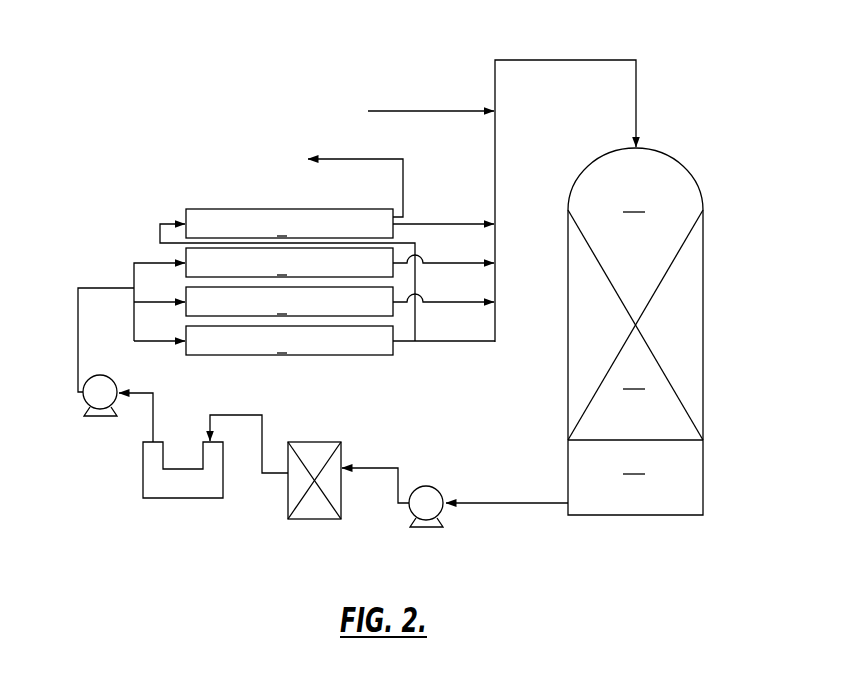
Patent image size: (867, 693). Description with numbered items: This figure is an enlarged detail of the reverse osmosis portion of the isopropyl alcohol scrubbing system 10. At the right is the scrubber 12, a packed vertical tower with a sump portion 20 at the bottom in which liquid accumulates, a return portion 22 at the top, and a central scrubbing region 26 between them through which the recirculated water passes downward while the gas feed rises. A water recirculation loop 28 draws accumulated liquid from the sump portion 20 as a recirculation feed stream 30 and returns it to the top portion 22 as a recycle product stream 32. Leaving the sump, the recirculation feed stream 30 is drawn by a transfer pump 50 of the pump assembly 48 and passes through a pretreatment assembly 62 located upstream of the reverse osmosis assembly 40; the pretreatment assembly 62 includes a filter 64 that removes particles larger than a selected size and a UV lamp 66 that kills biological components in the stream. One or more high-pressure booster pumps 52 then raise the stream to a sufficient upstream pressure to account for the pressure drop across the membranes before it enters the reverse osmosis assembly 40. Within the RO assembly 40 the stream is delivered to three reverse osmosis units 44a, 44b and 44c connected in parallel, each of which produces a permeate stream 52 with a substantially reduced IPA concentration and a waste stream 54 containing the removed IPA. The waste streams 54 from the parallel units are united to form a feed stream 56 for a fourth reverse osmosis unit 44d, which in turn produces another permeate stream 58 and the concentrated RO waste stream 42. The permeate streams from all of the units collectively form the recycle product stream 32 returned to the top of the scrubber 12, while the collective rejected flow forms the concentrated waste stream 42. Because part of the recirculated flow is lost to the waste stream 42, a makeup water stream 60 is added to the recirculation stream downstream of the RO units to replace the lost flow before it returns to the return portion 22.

The IPA scrubbing system 10 is at (785, 116).
The scrubber 12 is at (660, 331).
The sump portion 20 is at (635, 477).
The return portion 22 is at (635, 180).
The central scrubbing region 26 is at (635, 325).
The water recirculation loop 28 is at (501, 506).
The recirculation feed stream 30 is at (517, 500).
The recycle product stream 32 is at (523, 60).
The reverse osmosis assembly 40 is at (117, 196).
The concentrated RO waste stream 42 is at (357, 158).
The reverse osmosis unit 44a is at (289, 340).
The reverse osmosis unit 44b is at (289, 301).
The reverse osmosis unit 44c is at (289, 262).
The fourth reverse osmosis unit 44d is at (289, 223).
The pump assembly 48 is at (62, 421).
The transfer pump 50 is at (430, 493).
The booster pump / permeate stream 52 is at (469, 265).
The waste stream 54 is at (405, 258).
The feed stream 56 is at (160, 233).
The permeate stream 58 is at (445, 222).
The makeup water stream 60 is at (407, 110).
The pretreatment assembly 62 is at (241, 523).
The filter 64 is at (318, 442).
The UV lamp 66 is at (143, 492).